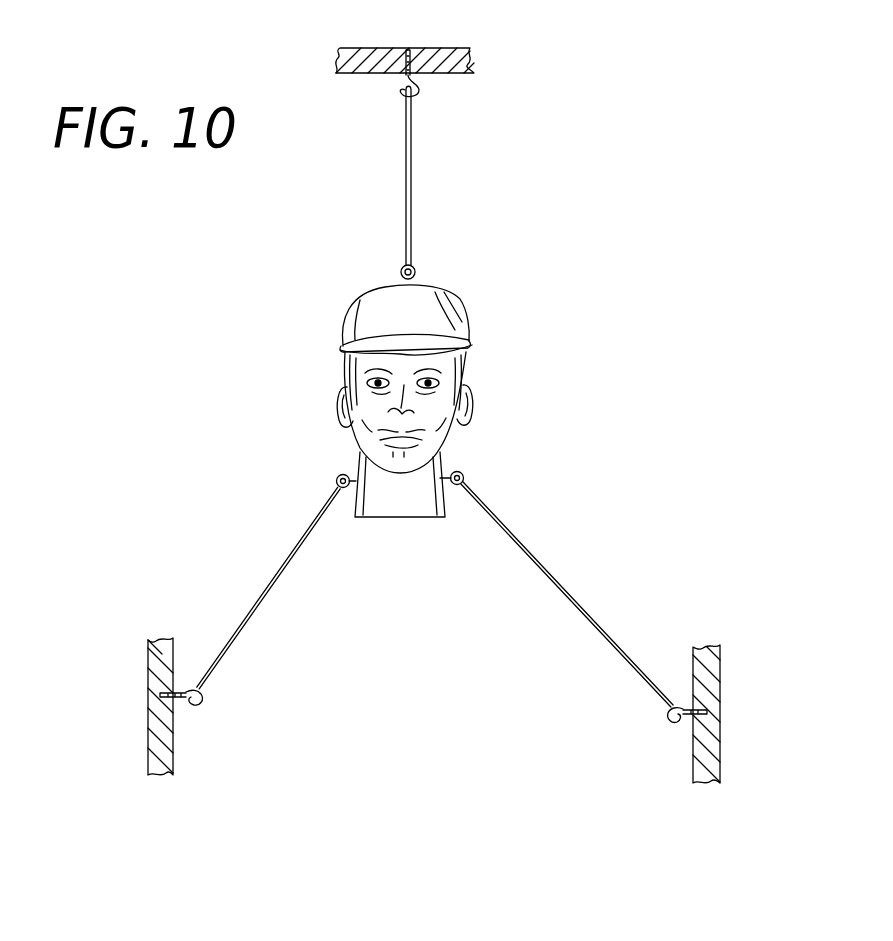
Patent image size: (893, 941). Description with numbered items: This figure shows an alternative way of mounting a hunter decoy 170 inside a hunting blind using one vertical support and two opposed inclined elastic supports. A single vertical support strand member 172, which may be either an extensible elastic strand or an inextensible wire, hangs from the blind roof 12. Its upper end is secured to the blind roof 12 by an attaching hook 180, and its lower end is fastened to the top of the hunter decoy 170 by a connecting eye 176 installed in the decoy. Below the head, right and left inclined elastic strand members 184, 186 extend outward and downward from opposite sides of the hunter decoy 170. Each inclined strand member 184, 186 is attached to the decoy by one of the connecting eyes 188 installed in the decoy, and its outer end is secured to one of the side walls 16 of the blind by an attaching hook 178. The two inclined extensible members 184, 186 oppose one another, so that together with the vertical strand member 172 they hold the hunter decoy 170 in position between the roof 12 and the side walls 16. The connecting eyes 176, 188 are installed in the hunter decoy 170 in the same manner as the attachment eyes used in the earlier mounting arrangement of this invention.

The blind roof 12 is at (470, 58).
The side walls 16 is at (153, 640).
The hunter decoy 170 is at (545, 331).
The vertical support strand member 172 is at (413, 185).
The connecting eye 176 is at (416, 267).
The attaching hooks 178 is at (208, 696).
The attaching hook 180 is at (420, 89).
The right inclined elastic strand member 184 is at (275, 578).
The left inclined elastic strand member 186 is at (585, 605).
The connecting eyes 188 is at (336, 474).